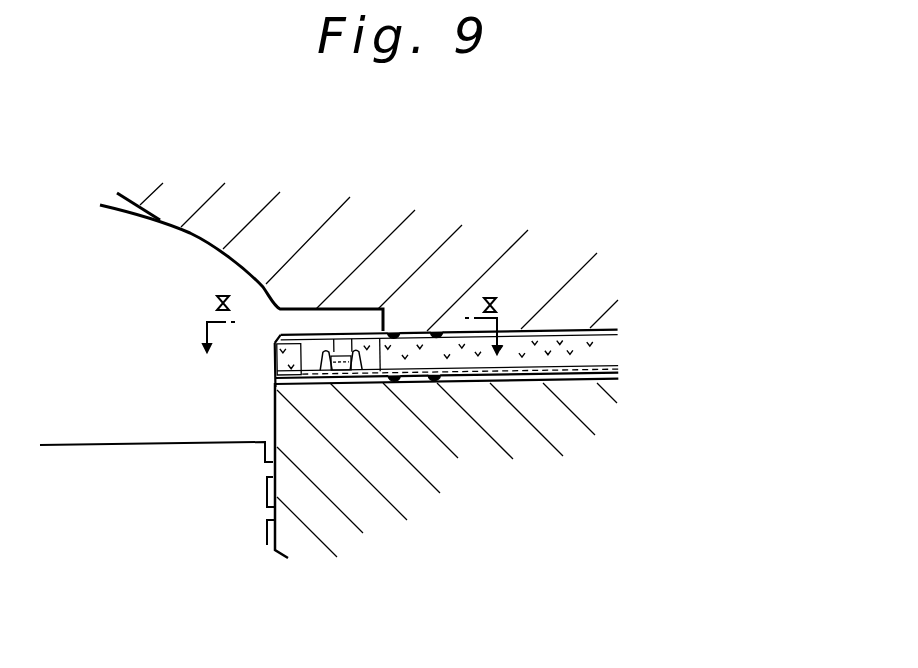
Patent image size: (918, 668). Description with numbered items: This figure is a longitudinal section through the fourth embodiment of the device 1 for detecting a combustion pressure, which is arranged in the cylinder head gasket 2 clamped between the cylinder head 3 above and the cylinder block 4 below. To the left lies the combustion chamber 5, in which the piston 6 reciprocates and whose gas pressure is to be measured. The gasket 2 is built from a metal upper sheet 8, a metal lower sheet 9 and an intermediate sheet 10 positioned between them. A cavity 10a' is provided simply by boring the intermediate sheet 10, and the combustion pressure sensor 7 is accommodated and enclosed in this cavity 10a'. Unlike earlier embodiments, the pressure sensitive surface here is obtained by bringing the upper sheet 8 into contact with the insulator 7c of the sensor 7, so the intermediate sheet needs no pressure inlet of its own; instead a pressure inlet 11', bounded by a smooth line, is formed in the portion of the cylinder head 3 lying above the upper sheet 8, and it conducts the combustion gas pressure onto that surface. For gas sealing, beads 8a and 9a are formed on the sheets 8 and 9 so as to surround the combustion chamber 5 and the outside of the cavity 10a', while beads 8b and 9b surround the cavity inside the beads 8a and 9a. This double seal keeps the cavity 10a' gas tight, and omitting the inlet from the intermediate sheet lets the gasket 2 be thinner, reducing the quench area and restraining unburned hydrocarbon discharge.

The device for detecting a pressure 1 is at (233, 361).
The cylinder head gasket 2 is at (720, 323).
The cylinder head 3 is at (491, 231).
The cylinder block 4 is at (486, 493).
The combustion chamber 5 is at (106, 365).
The piston 6 is at (178, 510).
The combustion pressure sensor 7 is at (300, 285).
The insulator 7c is at (337, 345).
The upper sheet 8 is at (462, 251).
The bead 8a is at (445, 333).
The bead 8b is at (439, 333).
The lower sheet 9 is at (471, 467).
The bead 9a is at (433, 384).
The bead 9b is at (397, 384).
The intermediate sheet 10 is at (479, 254).
The cavity 10a' is at (362, 244).
The pressure inlet 11' is at (458, 267).